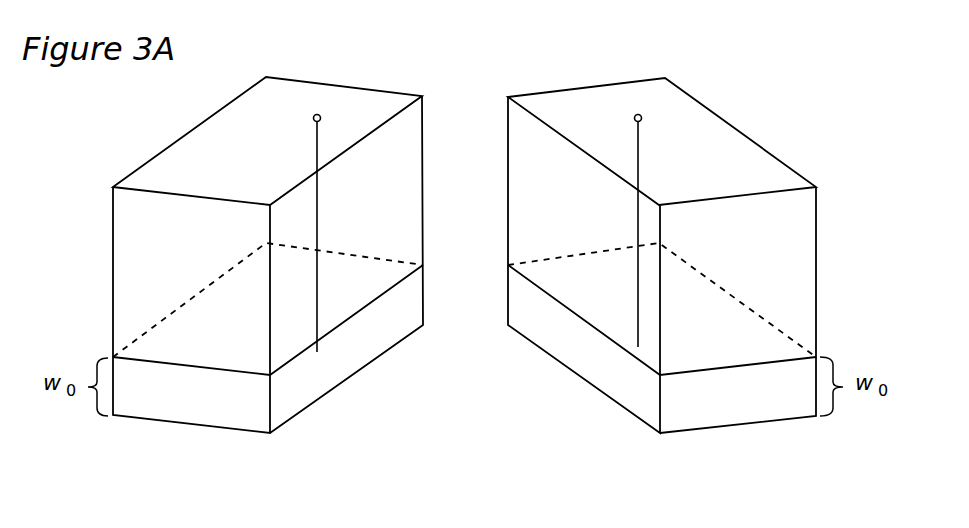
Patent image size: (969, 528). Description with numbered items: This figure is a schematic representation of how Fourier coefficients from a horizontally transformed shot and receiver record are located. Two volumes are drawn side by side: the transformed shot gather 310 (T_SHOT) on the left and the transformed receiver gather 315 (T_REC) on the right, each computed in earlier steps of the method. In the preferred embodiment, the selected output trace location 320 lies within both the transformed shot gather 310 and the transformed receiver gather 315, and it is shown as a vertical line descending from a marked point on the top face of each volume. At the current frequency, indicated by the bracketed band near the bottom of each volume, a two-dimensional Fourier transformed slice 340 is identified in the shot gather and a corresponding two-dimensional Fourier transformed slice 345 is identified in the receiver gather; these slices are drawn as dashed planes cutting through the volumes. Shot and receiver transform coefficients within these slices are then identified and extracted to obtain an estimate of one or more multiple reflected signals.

The transformed shot gather 310 is at (396, 92).
The transformed receiver gather 315 is at (652, 77).
The selected output trace location 320 is at (313, 115).
The 2D Fourier transformed slice 340 is at (230, 290).
The 2D Fourier transformed slice 345 is at (727, 292).